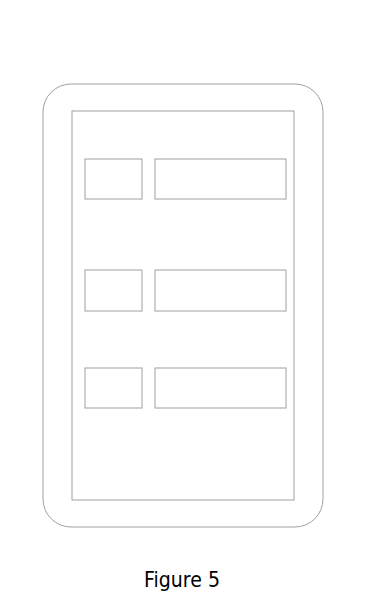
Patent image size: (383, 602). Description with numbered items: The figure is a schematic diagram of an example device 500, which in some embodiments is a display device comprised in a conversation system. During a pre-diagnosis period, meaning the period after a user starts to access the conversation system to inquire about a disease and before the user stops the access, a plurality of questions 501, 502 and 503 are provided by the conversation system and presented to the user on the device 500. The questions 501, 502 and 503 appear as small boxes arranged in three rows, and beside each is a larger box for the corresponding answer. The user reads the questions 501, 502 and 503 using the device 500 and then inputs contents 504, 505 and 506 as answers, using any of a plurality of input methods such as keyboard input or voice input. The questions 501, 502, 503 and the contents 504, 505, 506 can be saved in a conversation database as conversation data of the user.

The device 500 is at (183, 272).
The question 501 is at (112, 159).
The question 502 is at (112, 270).
The question 503 is at (112, 368).
The content 504 is at (229, 159).
The content 505 is at (229, 270).
The content 506 is at (229, 368).